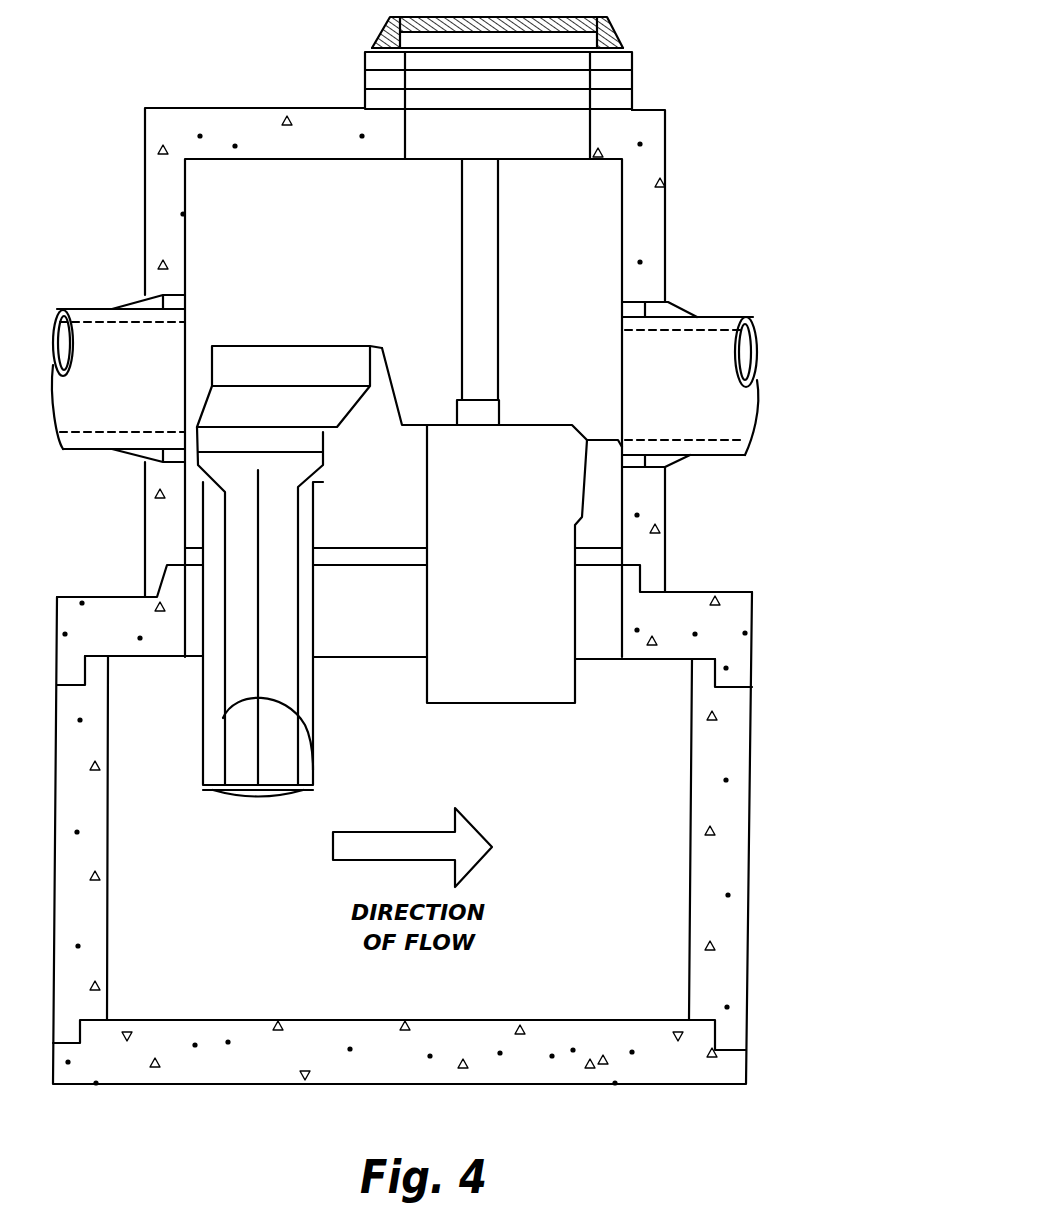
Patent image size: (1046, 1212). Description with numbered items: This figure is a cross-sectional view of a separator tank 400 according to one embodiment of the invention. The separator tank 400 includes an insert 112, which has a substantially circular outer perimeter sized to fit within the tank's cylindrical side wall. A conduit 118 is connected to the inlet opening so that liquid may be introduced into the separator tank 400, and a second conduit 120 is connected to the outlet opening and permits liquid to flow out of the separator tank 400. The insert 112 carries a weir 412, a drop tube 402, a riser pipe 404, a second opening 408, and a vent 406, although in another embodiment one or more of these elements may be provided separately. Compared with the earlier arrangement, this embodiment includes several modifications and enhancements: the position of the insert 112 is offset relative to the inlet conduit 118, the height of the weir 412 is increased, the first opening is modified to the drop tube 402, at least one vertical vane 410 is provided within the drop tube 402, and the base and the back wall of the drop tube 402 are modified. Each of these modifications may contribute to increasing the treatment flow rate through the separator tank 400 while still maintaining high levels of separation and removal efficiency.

The separator tank 400 is at (716, 98).
The conduit 118 is at (95, 308).
The conduit 120 is at (723, 317).
The weir 412 is at (267, 348).
The insert 112 is at (396, 396).
The vent 406 is at (497, 317).
The second opening 408 is at (532, 427).
The riser pipe 404 is at (575, 695).
The drop tube 402 is at (203, 693).
The vertical vane 410 is at (257, 680).